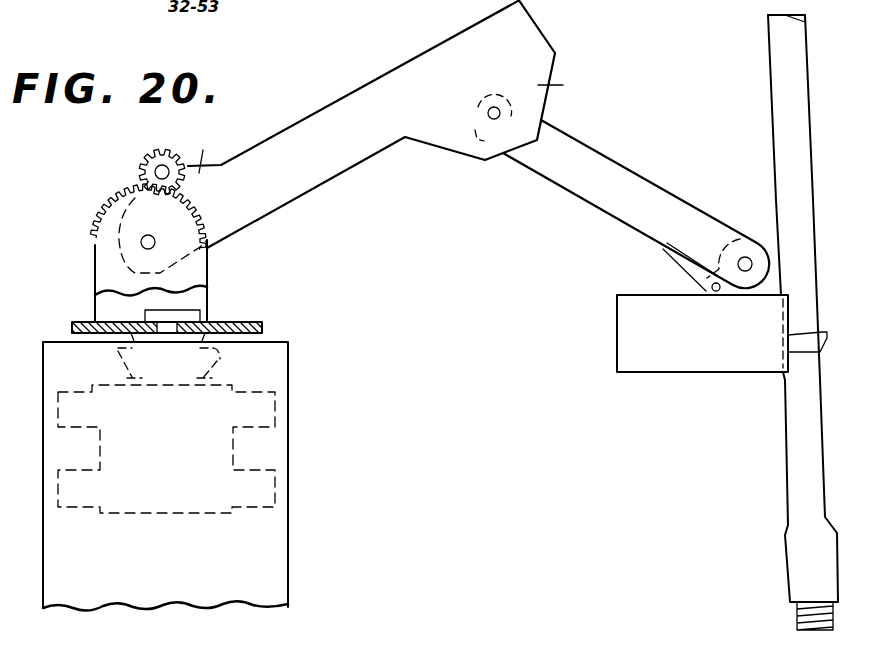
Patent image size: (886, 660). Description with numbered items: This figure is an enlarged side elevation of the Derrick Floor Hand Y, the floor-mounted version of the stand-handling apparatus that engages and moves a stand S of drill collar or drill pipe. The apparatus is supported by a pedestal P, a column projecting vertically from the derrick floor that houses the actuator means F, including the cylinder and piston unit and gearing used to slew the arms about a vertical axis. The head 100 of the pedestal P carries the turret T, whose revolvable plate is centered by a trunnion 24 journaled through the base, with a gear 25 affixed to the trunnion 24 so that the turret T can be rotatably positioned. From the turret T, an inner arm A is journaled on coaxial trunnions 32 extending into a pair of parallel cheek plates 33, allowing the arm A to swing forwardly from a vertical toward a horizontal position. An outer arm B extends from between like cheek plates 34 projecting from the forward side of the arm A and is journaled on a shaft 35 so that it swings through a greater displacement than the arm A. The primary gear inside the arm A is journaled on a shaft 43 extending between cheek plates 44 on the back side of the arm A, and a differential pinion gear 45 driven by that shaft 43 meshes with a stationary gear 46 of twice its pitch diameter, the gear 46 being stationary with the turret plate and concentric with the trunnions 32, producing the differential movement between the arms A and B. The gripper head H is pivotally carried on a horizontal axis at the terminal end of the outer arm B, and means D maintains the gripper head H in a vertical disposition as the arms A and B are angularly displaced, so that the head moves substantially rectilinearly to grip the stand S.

The shaft 43 is at (163, 165).
The cheek plates 44 is at (209, 149).
The differential pinion gear 45 is at (140, 167).
The stationary gear 46 is at (128, 192).
The trunnions 32 is at (142, 239).
The cheek plates 33 is at (95, 257).
The trunnion 24 is at (170, 323).
The gear 25 is at (220, 359).
The head 100 is at (196, 355).
The actuator means F is at (232, 448).
The pedestal P is at (255, 564).
The turret T is at (210, 272).
The Derrick Floor Hand Y is at (363, 85).
The inner arm A is at (313, 163).
The cheek plates 34 is at (564, 93).
The shaft 35 is at (494, 119).
The outer arm B is at (591, 181).
The means D is at (686, 260).
The gripper head H is at (652, 347).
The stand S is at (813, 114).